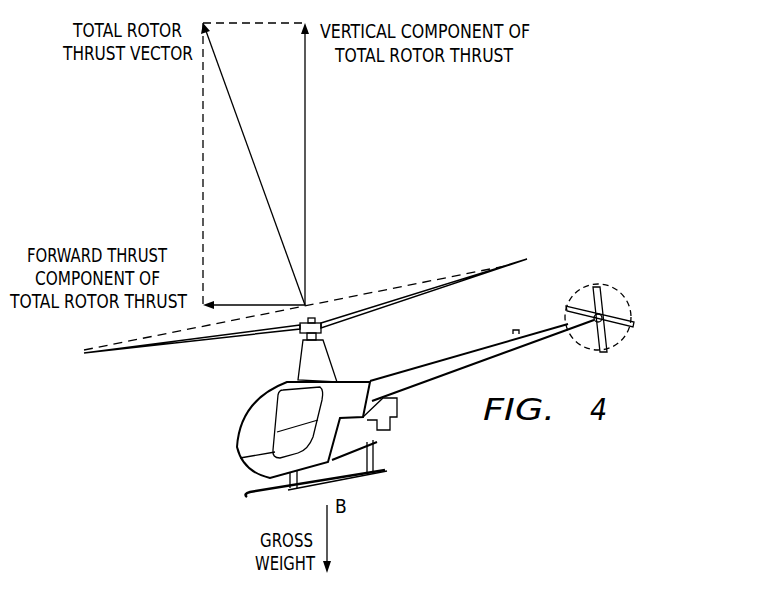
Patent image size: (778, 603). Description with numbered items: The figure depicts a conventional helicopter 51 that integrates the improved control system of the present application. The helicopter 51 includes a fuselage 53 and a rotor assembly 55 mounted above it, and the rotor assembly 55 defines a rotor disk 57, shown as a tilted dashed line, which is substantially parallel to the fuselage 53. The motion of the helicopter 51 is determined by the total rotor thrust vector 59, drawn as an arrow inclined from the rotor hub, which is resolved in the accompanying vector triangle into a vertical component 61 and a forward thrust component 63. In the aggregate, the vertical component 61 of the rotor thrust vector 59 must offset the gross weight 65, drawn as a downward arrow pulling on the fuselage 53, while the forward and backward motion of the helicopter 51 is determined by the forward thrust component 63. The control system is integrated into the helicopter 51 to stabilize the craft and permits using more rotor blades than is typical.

The helicopter 51 is at (359, 348).
The fuselage 53 is at (240, 457).
The rotor assembly 55 is at (165, 357).
The rotor disk 57 is at (383, 291).
The rotor thrust vector 59 is at (258, 175).
The vertical component 61 is at (306, 163).
The forward thrust component 63 is at (257, 305).
The gross weight 65 is at (328, 535).